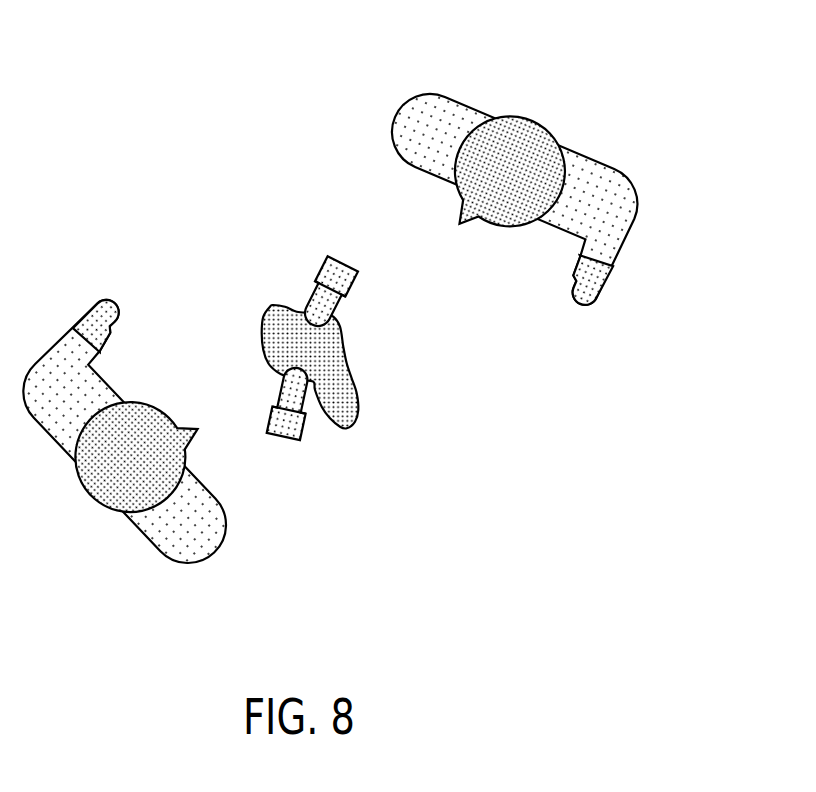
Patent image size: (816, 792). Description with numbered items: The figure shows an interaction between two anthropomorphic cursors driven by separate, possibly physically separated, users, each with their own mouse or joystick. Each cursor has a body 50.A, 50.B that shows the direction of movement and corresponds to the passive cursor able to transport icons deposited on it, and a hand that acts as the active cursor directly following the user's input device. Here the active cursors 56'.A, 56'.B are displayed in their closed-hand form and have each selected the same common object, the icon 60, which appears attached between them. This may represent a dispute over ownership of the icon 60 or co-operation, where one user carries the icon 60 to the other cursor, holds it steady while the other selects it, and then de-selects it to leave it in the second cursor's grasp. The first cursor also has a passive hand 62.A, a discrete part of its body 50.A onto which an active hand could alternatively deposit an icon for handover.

The body of first anthropomorphic cursor 50.A is at (420, 110).
The body of second anthropomorphic cursor 50.B is at (176, 548).
The passive hand of first anthropomorphic cursor 62.A is at (594, 286).
The icon 60 is at (345, 379).
The active cursor of first anthropomorphic cursor 56'.A is at (293, 294).
The active cursor of second anthropomorphic cursor 56'.B is at (257, 403).